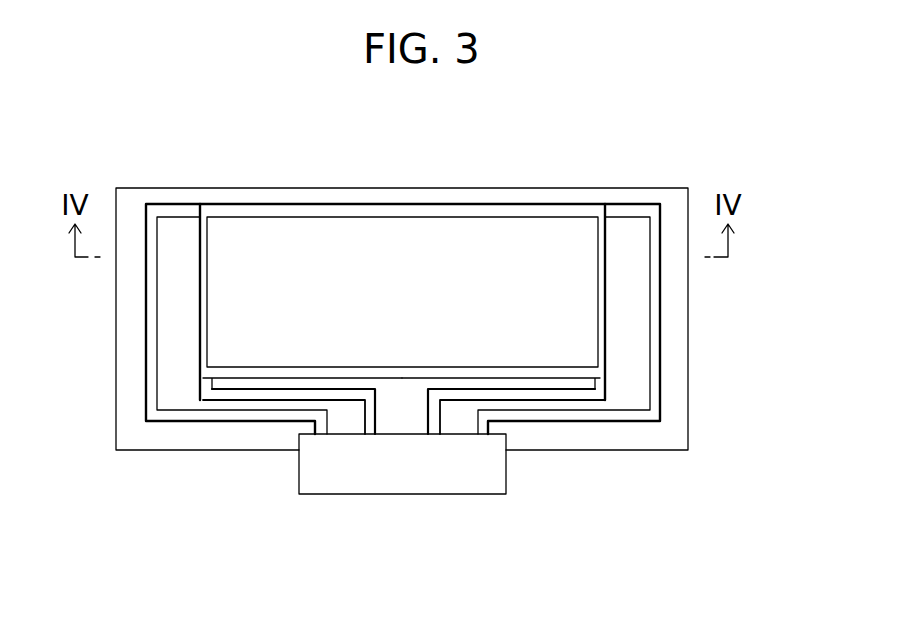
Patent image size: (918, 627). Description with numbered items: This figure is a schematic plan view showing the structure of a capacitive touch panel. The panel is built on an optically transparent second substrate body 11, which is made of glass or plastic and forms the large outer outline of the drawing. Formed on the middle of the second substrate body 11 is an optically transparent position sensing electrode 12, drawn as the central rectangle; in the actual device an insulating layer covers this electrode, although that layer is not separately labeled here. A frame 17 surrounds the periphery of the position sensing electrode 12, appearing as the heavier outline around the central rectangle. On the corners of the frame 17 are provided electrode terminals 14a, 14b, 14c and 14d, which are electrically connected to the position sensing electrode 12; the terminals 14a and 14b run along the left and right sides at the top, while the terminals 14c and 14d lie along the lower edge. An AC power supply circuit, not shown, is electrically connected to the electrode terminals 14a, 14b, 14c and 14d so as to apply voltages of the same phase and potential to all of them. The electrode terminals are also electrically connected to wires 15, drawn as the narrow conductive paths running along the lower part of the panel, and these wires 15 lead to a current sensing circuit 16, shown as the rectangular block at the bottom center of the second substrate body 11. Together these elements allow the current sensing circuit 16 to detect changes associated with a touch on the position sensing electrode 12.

The second substrate body 11 is at (680, 294).
The position sensing electrode 12 is at (565, 328).
The electrode terminal 14a is at (195, 210).
The electrode terminal 14b is at (605, 211).
The electrode terminal 14c is at (206, 381).
The electrode terminal 14d is at (600, 382).
The wires 15 is at (568, 394).
The current sensing circuit 16 is at (442, 482).
The frame 17 is at (472, 205).